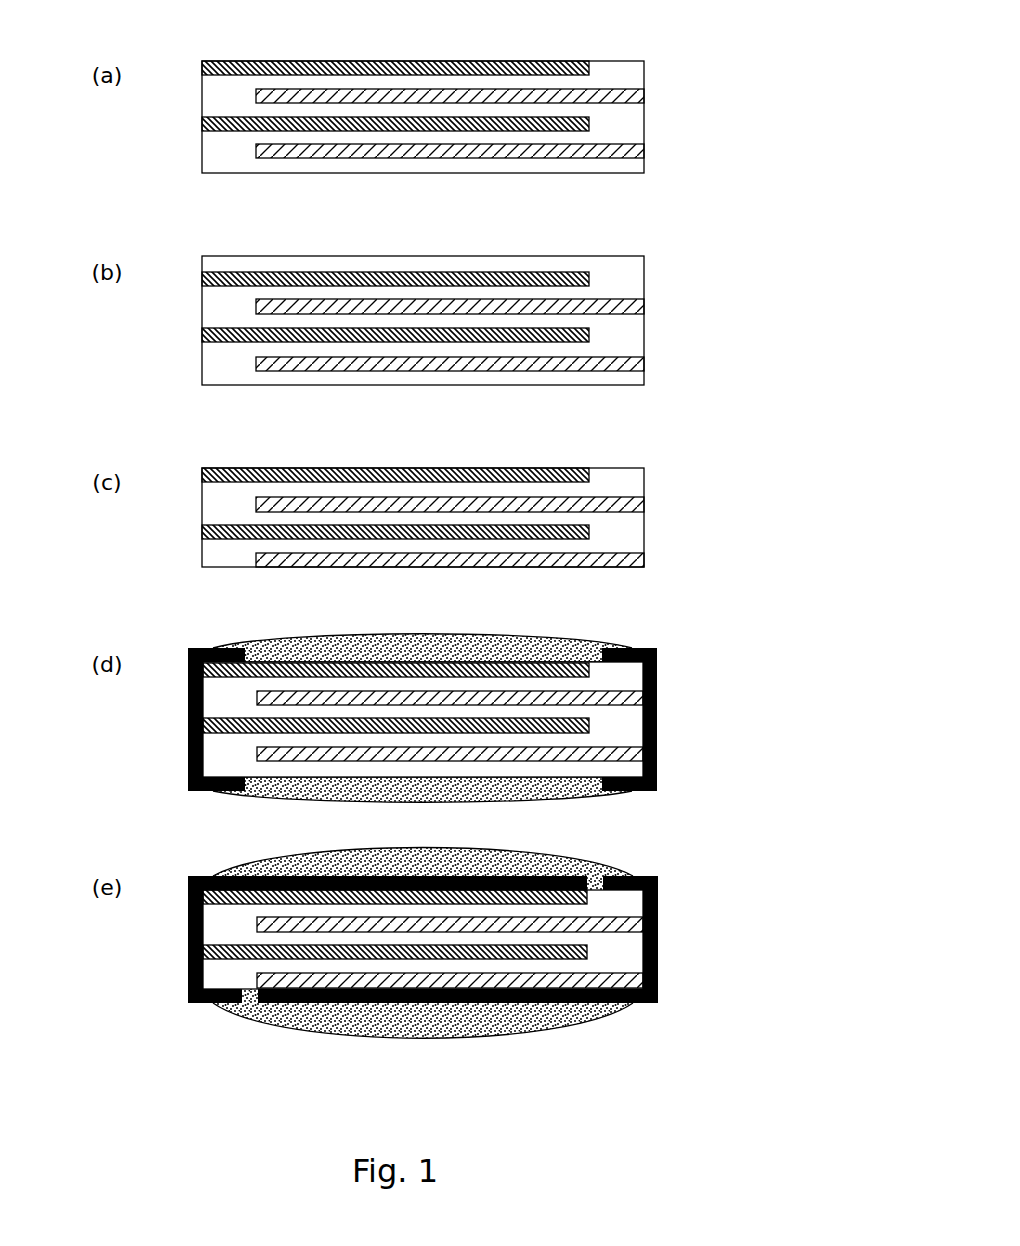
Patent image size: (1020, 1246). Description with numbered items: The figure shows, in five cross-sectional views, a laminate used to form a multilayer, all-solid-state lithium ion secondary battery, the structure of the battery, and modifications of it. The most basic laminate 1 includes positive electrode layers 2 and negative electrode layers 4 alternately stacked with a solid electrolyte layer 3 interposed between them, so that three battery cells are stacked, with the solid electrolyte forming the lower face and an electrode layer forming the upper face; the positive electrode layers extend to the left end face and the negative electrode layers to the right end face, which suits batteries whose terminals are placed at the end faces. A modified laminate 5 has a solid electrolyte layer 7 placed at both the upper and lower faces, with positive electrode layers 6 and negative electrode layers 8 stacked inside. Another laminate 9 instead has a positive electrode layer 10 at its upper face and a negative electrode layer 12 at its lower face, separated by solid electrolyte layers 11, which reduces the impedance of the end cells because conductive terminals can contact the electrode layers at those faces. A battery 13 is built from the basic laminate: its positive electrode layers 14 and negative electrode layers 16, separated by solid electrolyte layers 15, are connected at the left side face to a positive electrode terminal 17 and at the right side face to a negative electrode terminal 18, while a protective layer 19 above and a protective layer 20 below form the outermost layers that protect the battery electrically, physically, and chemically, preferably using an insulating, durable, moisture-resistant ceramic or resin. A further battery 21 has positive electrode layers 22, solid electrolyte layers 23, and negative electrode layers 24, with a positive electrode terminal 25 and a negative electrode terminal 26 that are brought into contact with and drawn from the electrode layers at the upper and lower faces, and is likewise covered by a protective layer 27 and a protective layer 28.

The laminate 1 is at (592, 47).
The positive electrode layer 2 is at (403, 67).
The solid electrolyte layer 3 is at (622, 78).
The negative electrode layer 4 is at (617, 97).
The laminate 5 is at (600, 245).
The positive electrode layer 6 is at (410, 275).
The solid electrolyte layer 7 is at (626, 285).
The negative electrode layer 8 is at (625, 305).
The laminate 9 is at (605, 455).
The positive electrode layer 10 is at (410, 468).
The solid electrolyte layer 11 is at (640, 485).
The negative electrode layer 12 is at (635, 505).
The battery 13 is at (635, 622).
The positive electrode layer 14 is at (315, 663).
The solid electrolyte layer 15 is at (632, 677).
The negative electrode layer 16 is at (660, 723).
The positive electrode terminal 17 is at (190, 768).
The negative electrode terminal 18 is at (655, 785).
The protective layer 19 is at (440, 650).
The protective layer 20 is at (435, 785).
The battery 21 is at (630, 862).
The positive electrode layer 22 is at (282, 876).
The solid electrolyte layer 23 is at (655, 890).
The negative electrode layer 24 is at (660, 948).
The positive electrode terminal 25 is at (190, 990).
The negative electrode terminal 26 is at (660, 1000).
The protective layer 27 is at (390, 868).
The protective layer 28 is at (405, 1020).